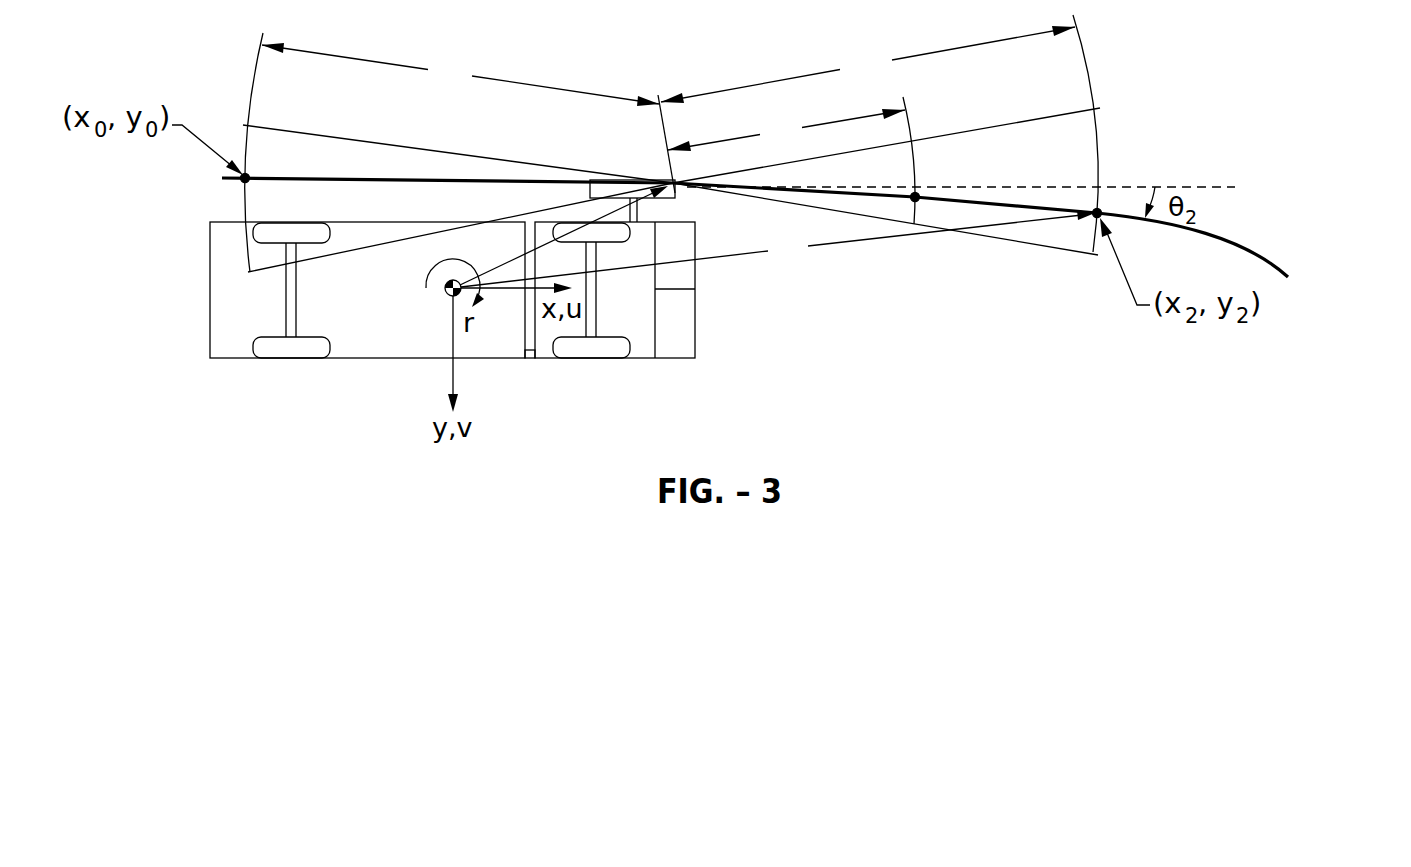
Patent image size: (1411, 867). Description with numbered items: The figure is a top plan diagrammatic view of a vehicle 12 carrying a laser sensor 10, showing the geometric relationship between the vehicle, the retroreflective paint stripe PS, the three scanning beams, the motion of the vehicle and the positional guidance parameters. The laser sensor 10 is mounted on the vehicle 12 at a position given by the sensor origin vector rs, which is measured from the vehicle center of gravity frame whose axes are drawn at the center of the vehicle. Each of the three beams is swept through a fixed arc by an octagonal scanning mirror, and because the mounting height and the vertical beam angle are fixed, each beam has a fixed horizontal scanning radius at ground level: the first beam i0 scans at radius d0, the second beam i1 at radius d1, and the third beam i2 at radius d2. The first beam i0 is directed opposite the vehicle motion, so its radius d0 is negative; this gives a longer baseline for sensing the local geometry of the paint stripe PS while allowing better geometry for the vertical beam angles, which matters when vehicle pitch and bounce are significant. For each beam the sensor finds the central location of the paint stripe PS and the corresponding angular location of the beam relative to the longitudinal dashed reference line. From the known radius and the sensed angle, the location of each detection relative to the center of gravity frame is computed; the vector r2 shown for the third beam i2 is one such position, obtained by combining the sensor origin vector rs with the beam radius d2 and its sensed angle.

The laser sensor 10 is at (590, 188).
The vehicle 12 is at (238, 360).
The paint stripe PS is at (1245, 226).
The first beam i0 is at (233, 184).
The second beam i1 is at (797, 208).
The third beam i2 is at (1070, 113).
The horizontal scanning radius of the first beam d0 is at (460, 74).
The horizontal scanning radius of the second beam d1 is at (786, 130).
The horizontal scanning radius of the third beam d2 is at (868, 64).
The sensor origin vector rs is at (564, 235).
The position vector of the third beam detection r2 is at (778, 248).